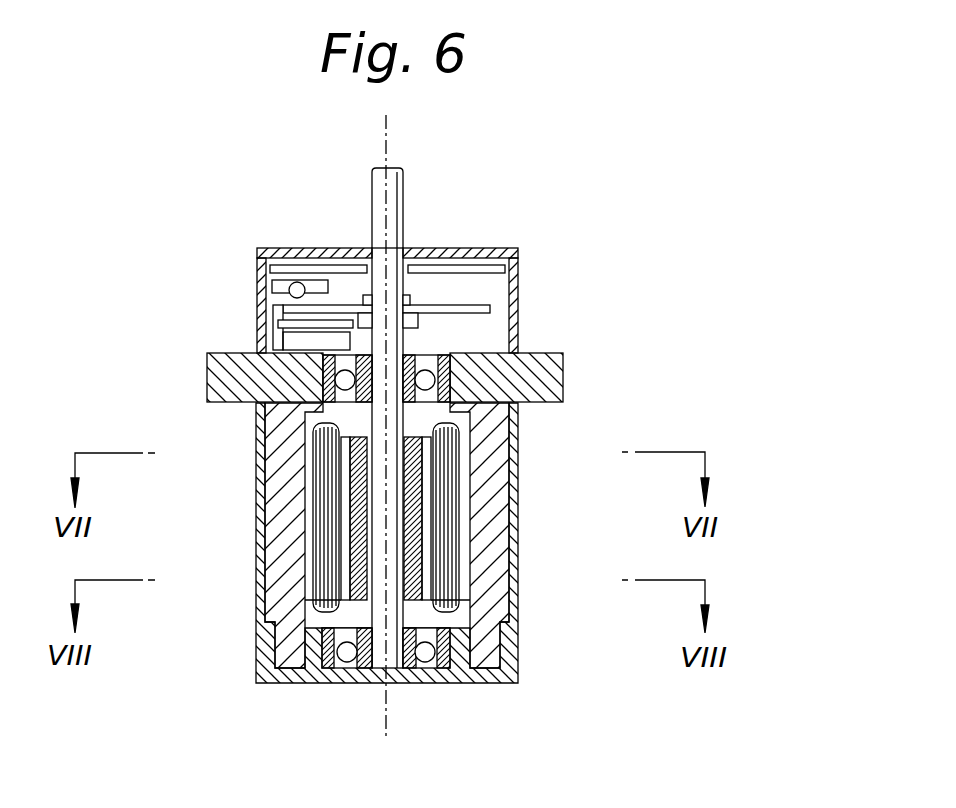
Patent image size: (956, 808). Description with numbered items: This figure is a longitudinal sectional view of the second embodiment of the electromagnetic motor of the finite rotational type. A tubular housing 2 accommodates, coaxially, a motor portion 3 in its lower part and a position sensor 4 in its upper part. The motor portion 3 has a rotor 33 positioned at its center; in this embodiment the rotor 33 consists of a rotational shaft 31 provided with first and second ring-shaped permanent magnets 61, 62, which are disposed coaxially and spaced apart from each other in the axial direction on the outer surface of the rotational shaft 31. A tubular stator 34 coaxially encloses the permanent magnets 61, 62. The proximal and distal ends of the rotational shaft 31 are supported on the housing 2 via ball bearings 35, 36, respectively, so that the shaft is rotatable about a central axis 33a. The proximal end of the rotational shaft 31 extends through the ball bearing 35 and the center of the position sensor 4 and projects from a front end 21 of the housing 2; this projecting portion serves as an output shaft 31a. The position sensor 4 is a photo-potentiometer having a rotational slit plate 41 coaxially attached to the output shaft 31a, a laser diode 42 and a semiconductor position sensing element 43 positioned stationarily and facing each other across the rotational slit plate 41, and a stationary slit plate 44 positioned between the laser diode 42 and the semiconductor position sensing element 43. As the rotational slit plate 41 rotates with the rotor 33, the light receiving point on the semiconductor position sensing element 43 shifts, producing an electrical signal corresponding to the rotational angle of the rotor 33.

The tubular housing 2 is at (514, 678).
The motor portion 3 is at (380, 496).
The position sensor 4 is at (378, 265).
The front end 21 is at (482, 248).
The rotational shaft 31 is at (378, 496).
The output shaft 31a is at (403, 204).
The rotor 33 is at (305, 458).
The central axis 33a is at (387, 138).
The tubular stator 34 is at (500, 473).
The ball bearing 35 is at (450, 384).
The ball bearing 36 is at (337, 667).
The rotational slit plate 41 is at (283, 298).
The laser diode 42 is at (298, 282).
The semiconductor position sensing element 43 is at (278, 341).
The stationary slit plate 44 is at (283, 321).
The first ring-shaped permanent magnet 61 is at (312, 454).
The second ring-shaped permanent magnet 62 is at (350, 548).